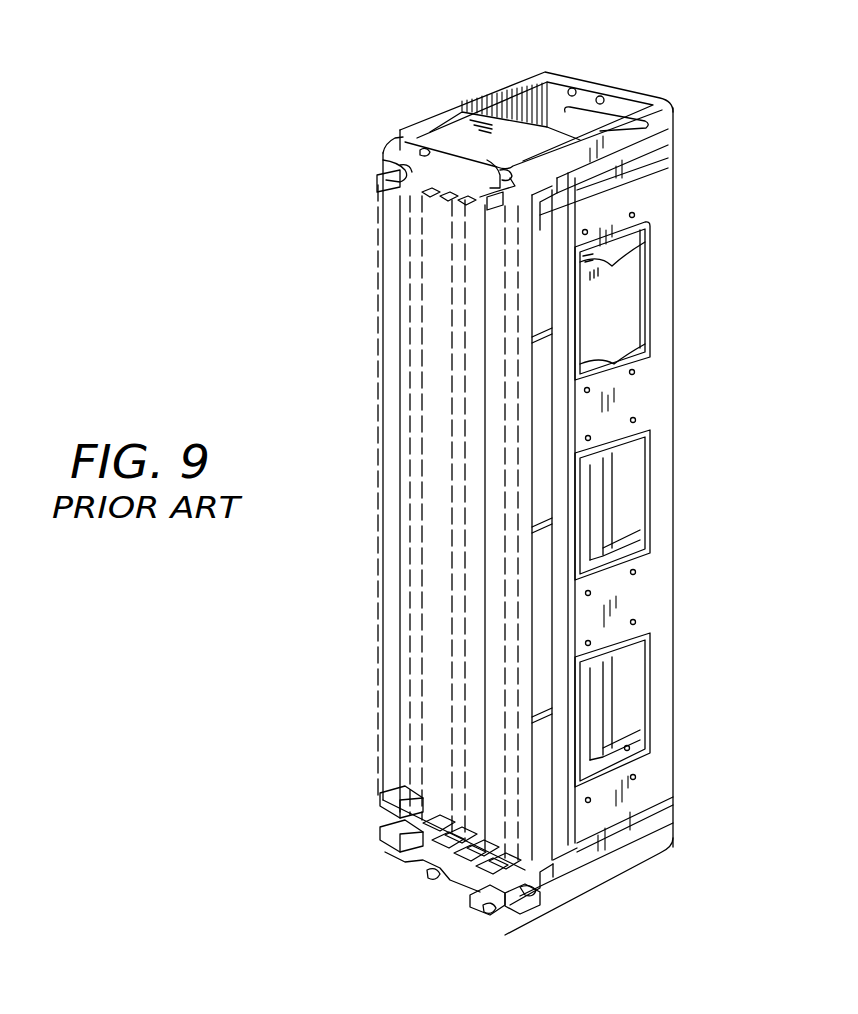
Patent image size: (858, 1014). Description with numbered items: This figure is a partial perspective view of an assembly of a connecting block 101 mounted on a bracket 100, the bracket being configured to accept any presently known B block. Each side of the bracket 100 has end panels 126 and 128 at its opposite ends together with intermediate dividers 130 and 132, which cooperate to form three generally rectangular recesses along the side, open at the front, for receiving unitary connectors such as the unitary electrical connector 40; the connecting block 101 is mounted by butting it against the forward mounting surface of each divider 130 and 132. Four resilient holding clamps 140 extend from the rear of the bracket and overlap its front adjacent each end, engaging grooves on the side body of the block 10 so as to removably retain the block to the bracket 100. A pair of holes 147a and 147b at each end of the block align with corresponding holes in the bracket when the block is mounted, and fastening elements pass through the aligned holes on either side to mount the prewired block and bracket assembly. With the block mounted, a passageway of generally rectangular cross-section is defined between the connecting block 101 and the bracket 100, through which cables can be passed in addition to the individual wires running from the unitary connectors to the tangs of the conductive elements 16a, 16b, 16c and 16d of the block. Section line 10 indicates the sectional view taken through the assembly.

The block 10 is at (297, 105).
The bracket 100 is at (686, 458).
The connecting block 101 is at (415, 418).
The end panel 126 is at (660, 752).
The end panel 128 is at (655, 196).
The intermediate divider 130 is at (660, 390).
The intermediate divider 132 is at (655, 588).
The unitary electrical connector 40 is at (610, 662).
The resilient holding clamp 140 is at (668, 152).
The hole 147a is at (398, 132).
The hole 147b is at (488, 168).
The conductive element 16a is at (400, 822).
The conductive element 16b is at (400, 850).
The conductive element 16c is at (450, 897).
The conductive element 16d is at (525, 895).